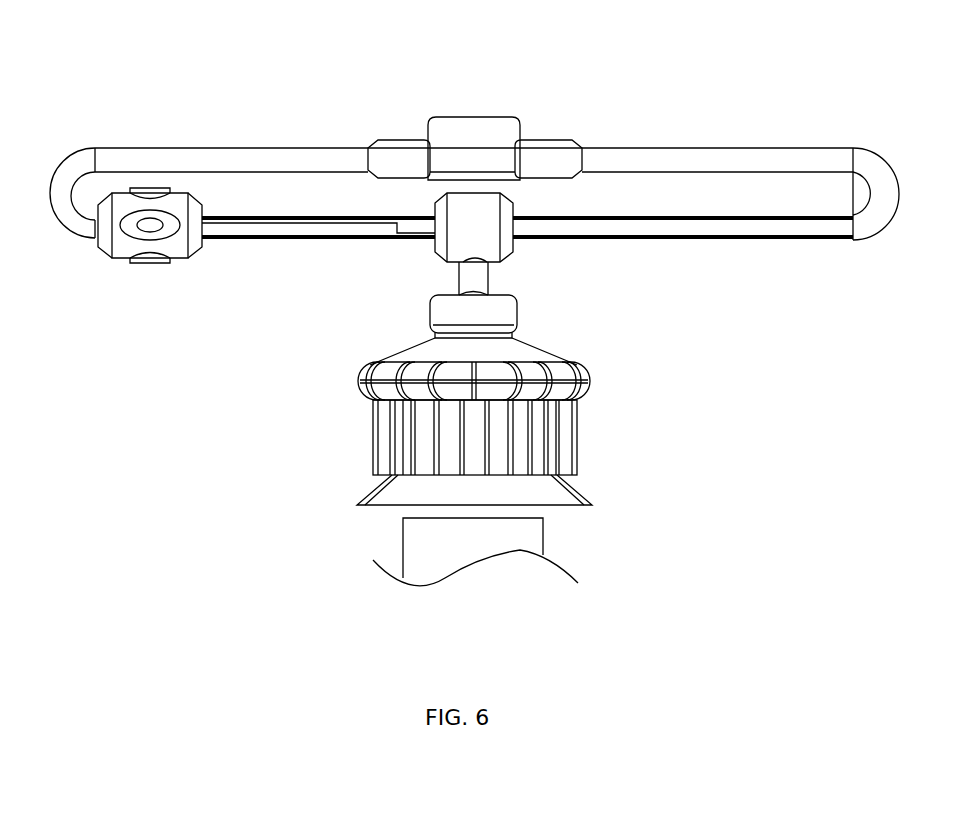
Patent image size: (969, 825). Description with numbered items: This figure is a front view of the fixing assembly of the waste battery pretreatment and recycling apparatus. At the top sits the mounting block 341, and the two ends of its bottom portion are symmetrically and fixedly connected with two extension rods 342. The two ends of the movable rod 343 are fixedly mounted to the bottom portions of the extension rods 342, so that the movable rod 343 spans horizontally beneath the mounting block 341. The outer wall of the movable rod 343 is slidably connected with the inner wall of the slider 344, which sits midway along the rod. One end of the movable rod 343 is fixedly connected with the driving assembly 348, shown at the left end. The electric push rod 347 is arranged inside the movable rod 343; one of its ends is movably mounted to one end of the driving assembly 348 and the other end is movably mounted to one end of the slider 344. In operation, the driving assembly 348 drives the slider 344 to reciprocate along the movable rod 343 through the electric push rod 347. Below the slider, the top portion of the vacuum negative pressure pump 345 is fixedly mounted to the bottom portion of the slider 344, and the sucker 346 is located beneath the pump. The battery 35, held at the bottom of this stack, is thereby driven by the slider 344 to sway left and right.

The battery 35 is at (473, 550).
The mounting block 341 is at (445, 148).
The extension rod 342 is at (330, 140).
The movable rod 343 is at (747, 228).
The slider 344 is at (493, 213).
The vacuum negative pressure pump 345 is at (527, 358).
The sucker 346 is at (392, 475).
The electric push rod 347 is at (293, 228).
The driving assembly 348 is at (155, 225).